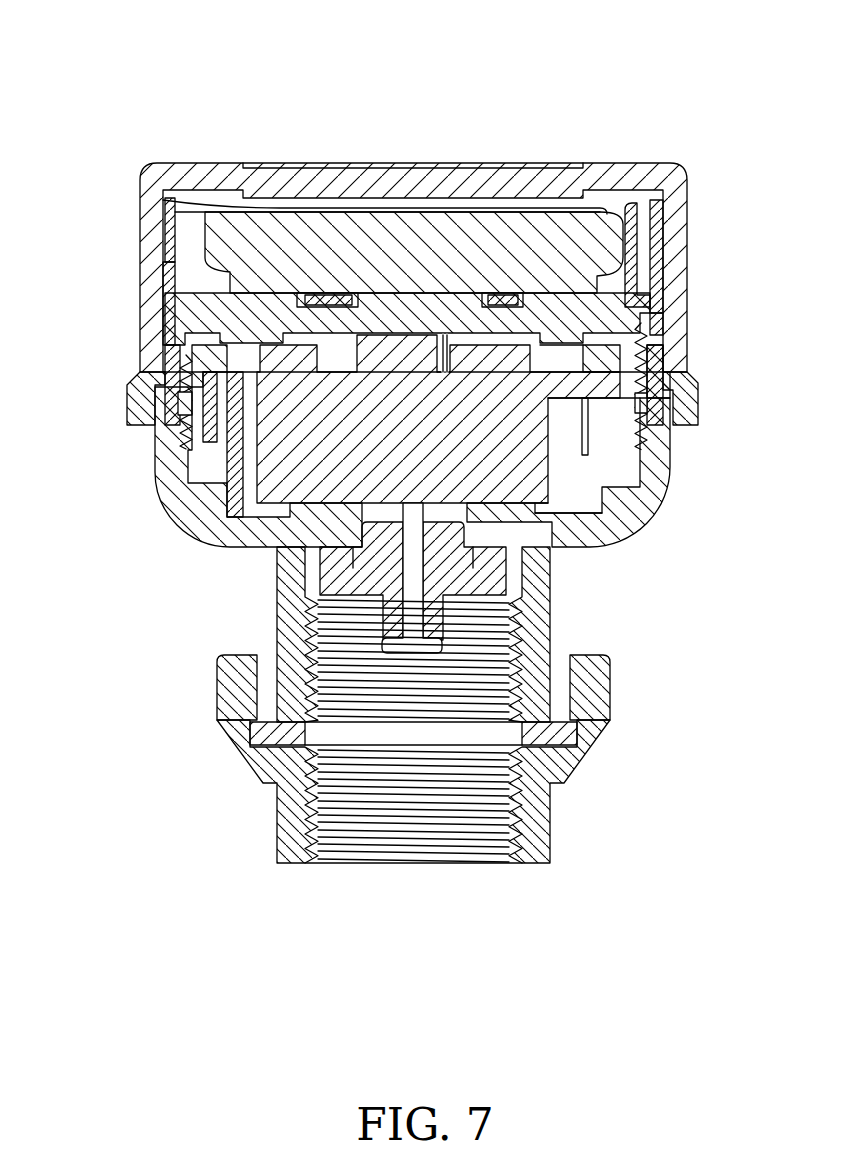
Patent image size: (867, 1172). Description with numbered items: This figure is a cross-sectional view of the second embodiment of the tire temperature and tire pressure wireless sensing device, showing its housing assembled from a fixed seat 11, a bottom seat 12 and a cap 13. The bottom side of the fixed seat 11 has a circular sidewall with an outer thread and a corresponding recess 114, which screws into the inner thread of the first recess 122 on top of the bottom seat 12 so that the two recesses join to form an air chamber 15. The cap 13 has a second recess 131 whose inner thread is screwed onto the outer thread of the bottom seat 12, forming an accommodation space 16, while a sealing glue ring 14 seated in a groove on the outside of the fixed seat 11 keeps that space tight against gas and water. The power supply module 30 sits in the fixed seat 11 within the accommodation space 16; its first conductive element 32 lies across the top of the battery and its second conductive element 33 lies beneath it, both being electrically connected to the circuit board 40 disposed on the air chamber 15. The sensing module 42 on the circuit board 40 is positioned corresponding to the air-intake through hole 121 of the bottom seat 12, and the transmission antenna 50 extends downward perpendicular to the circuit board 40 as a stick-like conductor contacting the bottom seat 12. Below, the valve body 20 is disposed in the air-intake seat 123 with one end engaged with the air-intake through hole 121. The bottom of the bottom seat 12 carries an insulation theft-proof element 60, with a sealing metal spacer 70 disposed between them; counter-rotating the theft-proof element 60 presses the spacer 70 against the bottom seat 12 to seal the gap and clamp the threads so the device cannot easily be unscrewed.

The power supply module 30 is at (583, 57).
The first conductive element 32 is at (433, 238).
The second conductive element 33 is at (508, 293).
The cap 13 is at (153, 194).
The second recess 131 is at (657, 202).
The fixed seat 11 is at (172, 293).
The accommodation space 16 is at (610, 282).
The sealing glue ring 14 is at (655, 333).
The corresponding recess 114 is at (598, 358).
The circuit board 40 is at (613, 390).
The sensing module 42 is at (275, 457).
The first recess 122 is at (628, 474).
The bottom seat 12 is at (183, 510).
The air chamber 15 is at (615, 470).
The transmission antenna 50 is at (237, 513).
The air-intake through hole 121 is at (460, 560).
The valve body 20 is at (503, 578).
The insulation theft-proof element 60 is at (600, 678).
The sealing metal spacer 70 is at (577, 742).
The air-intake seat 123 is at (410, 845).